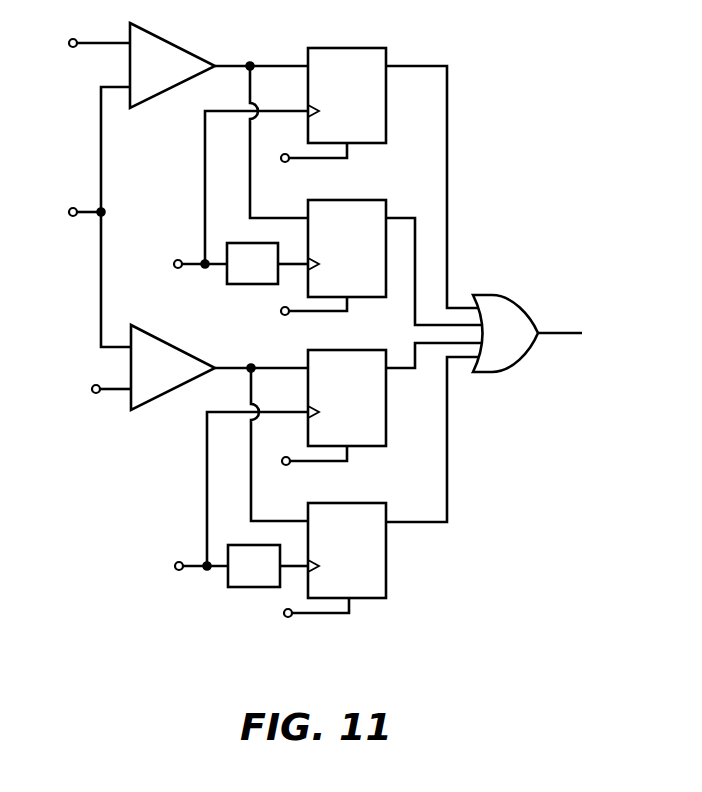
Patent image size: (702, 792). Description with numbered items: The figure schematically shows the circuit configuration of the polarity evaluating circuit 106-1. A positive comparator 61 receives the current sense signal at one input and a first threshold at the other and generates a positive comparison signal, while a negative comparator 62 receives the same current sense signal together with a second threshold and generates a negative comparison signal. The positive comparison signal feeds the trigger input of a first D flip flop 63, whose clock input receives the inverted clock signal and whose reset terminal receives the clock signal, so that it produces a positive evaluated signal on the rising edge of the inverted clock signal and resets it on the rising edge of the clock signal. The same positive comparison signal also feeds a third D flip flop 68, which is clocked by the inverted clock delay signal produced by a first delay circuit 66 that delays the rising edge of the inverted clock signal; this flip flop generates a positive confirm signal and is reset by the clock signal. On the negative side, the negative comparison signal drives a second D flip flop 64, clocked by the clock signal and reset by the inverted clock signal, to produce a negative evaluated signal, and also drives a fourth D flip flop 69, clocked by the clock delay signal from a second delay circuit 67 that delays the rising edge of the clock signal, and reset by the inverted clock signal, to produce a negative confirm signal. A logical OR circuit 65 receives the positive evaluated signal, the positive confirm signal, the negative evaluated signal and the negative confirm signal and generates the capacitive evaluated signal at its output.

The positive comparator 61 is at (172, 65).
The negative comparator 62 is at (173, 367).
The first D flip flop 63 is at (347, 96).
The second D flip flop 64 is at (347, 398).
The logical OR circuit 65 is at (505, 333).
The first delay circuit 66 is at (252, 263).
The second delay circuit 67 is at (254, 566).
The third D flip flop 68 is at (347, 248).
The fourth D flip flop 69 is at (347, 551).
The polarity evaluating circuit 106-1 is at (517, 78).